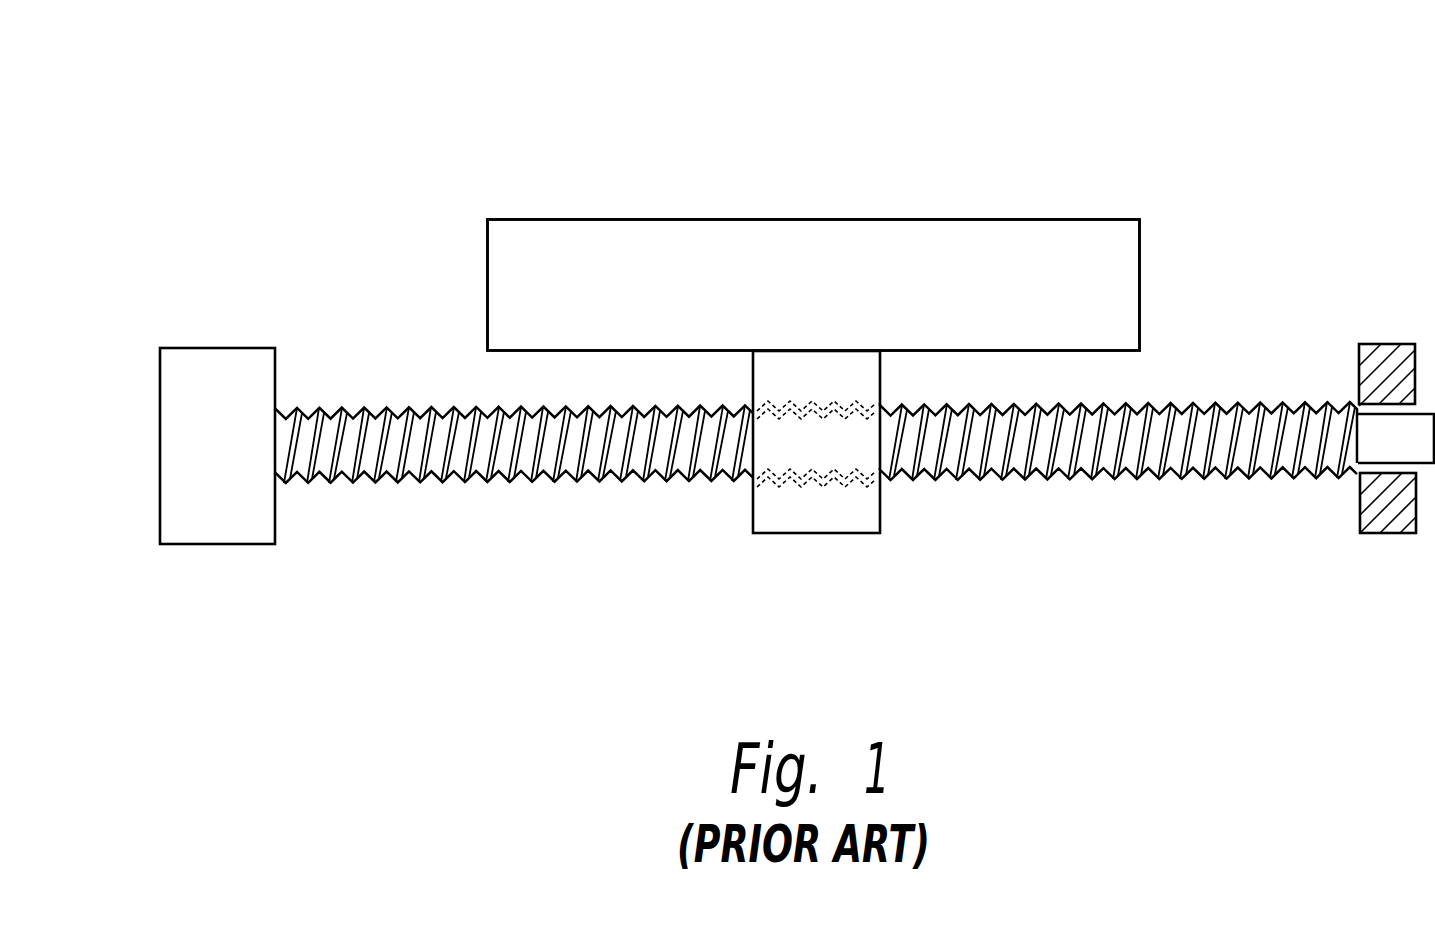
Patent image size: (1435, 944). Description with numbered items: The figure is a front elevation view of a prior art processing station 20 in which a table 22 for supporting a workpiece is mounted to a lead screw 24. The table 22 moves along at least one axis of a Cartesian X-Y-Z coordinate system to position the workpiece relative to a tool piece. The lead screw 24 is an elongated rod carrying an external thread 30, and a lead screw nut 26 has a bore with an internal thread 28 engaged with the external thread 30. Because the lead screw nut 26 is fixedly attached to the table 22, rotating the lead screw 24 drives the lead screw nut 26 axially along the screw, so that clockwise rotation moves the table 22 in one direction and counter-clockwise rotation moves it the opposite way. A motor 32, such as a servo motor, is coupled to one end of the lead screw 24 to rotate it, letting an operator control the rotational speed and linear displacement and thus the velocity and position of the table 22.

The processing station 20 is at (572, 150).
The table 22 is at (943, 219).
The lead screw 24 is at (1094, 515).
The lead screw nut 26 is at (795, 535).
The internal thread 28 is at (835, 487).
The external thread 30 is at (620, 480).
The motor 32 is at (227, 545).